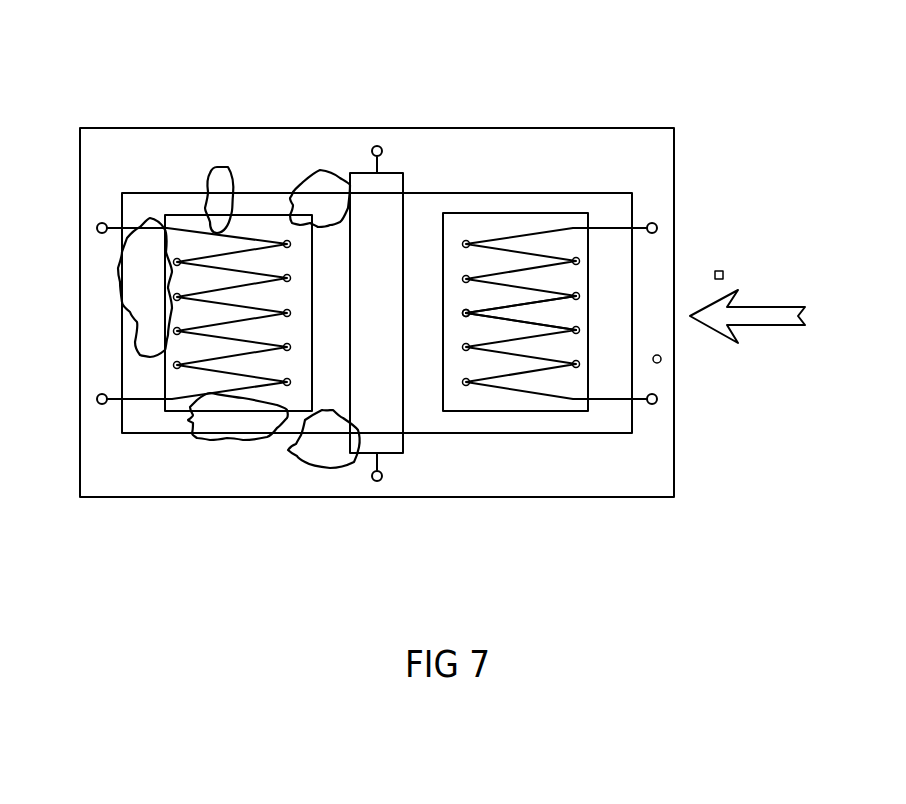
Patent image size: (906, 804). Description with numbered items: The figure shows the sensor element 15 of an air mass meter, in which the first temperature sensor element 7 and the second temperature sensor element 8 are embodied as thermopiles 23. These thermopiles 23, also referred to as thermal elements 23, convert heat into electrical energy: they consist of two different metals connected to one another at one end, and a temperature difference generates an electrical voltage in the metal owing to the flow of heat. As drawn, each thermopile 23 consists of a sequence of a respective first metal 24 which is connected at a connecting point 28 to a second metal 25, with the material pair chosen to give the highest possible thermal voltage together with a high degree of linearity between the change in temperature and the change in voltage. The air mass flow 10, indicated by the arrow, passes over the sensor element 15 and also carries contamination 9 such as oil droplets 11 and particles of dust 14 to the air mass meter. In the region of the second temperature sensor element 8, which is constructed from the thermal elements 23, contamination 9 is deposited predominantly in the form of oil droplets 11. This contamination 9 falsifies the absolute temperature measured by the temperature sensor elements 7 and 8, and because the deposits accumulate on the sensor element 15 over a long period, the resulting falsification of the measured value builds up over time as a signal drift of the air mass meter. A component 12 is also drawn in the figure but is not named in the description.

The first temperature sensor element 7 is at (507, 228).
The second temperature sensor element 8 is at (178, 388).
The contamination 9 is at (145, 250).
The air mass flow 10 is at (757, 318).
The oil droplets 11 is at (340, 173).
The capacitor 12 is at (392, 190).
The particles of dust 14 is at (719, 271).
The sensor element 15 is at (648, 160).
The thermopiles 23 is at (177, 364).
The first metal 24 is at (493, 303).
The second metal 25 is at (487, 318).
The connecting point 28 is at (466, 313).